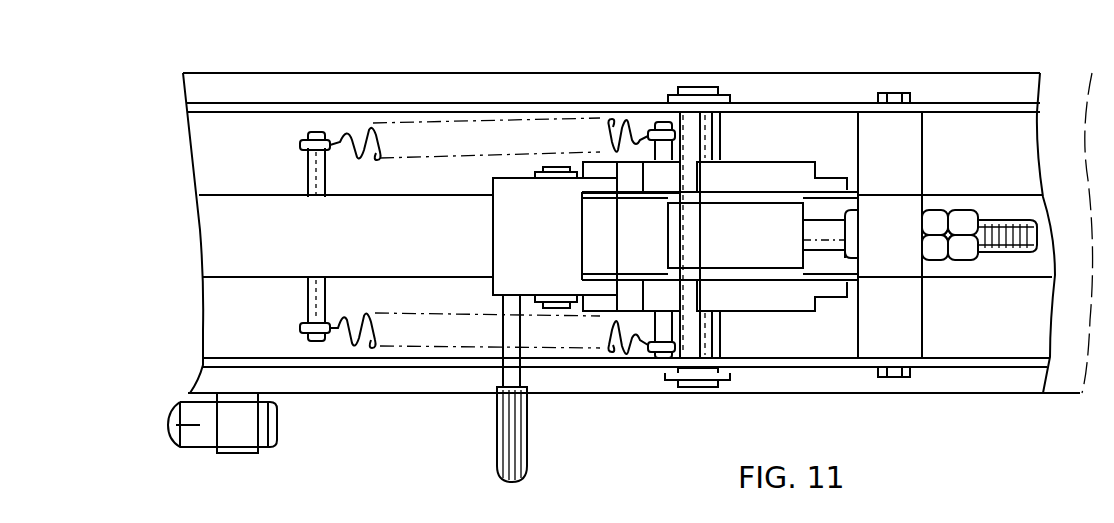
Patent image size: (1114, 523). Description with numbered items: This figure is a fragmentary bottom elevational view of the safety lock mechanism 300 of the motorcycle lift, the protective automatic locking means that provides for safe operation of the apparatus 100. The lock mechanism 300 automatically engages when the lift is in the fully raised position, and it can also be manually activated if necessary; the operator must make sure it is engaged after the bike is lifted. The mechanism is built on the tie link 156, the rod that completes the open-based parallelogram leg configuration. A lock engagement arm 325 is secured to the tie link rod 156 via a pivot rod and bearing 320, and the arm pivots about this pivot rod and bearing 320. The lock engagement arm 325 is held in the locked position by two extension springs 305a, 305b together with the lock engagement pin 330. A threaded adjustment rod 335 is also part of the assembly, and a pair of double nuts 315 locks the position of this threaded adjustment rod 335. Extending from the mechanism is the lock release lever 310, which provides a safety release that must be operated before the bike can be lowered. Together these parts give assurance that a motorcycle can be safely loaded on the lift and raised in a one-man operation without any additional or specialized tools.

The apparatus 100 is at (1050, 125).
The tie link 156 is at (296, 251).
The safety lock mechanism 300 is at (453, 403).
The extension spring 305a is at (342, 342).
The extension spring 305b is at (362, 150).
The lock release lever 310 is at (527, 464).
The double nuts 315 is at (968, 210).
The pivot rod and bearing 320 is at (552, 167).
The lock engagement arm 325 is at (750, 170).
The lock engagement pin 330 is at (693, 387).
The threaded adjustment rod 335 is at (823, 253).